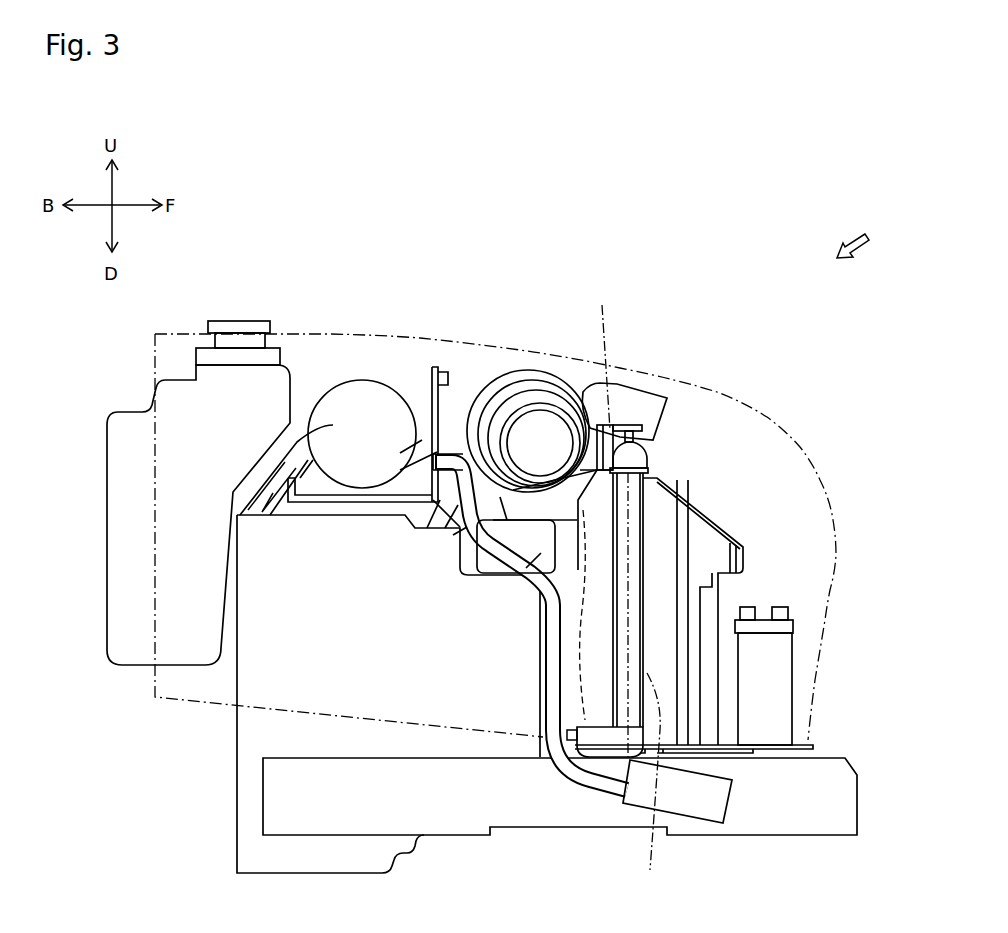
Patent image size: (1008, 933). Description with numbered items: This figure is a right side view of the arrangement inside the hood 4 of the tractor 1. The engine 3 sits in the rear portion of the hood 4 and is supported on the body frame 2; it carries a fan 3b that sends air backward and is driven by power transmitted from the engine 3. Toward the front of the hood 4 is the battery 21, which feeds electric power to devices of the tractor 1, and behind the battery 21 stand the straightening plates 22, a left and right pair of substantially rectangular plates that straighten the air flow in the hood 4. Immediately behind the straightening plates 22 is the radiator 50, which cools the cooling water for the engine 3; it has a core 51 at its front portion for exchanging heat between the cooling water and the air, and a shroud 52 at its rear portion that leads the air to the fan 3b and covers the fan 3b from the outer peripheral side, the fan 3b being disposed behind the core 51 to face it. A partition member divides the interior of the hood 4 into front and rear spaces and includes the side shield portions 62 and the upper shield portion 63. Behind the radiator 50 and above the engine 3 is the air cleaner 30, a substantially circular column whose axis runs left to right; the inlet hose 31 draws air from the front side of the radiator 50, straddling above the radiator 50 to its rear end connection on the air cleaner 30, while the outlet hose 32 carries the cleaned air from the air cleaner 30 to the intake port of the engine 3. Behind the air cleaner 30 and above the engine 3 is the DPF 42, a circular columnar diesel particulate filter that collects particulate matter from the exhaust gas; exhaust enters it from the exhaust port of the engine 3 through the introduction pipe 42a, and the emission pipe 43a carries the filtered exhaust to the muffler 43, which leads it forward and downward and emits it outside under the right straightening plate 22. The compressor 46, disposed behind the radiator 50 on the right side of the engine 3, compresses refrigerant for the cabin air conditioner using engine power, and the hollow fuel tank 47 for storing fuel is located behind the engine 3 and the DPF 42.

The tractor 1 is at (859, 235).
The body frame 2 is at (815, 823).
The engine 3 is at (247, 747).
The fan 3b is at (565, 741).
The hood 4 is at (713, 403).
The battery 21 is at (780, 695).
The straightening plates 22 is at (728, 560).
The air cleaner 30 is at (564, 374).
The inlet hose 31 is at (645, 407).
The outlet hose 32 is at (463, 452).
The DPF 42 is at (360, 400).
The introduction pipe 42a is at (273, 493).
The muffler 43 is at (700, 810).
The emission pipe 43a is at (460, 533).
The compressor 46 is at (510, 577).
The fuel tank 47 is at (117, 490).
The radiator 50 is at (657, 527).
The core 51 is at (637, 500).
The shroud 52 is at (597, 720).
The side shield portions 62 is at (657, 796).
The upper shield portion 63 is at (614, 500).